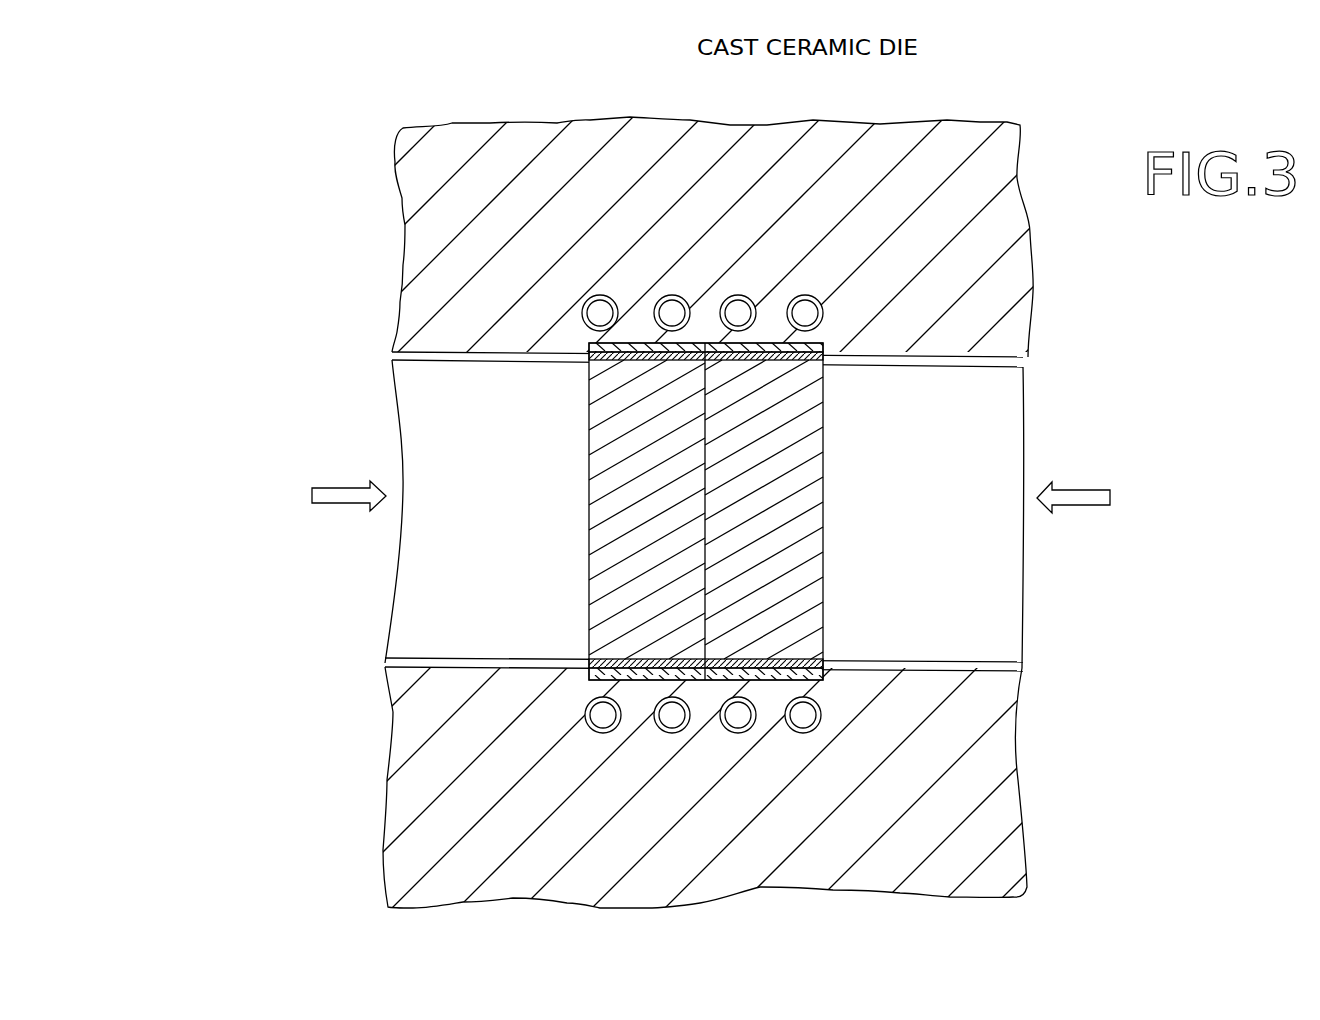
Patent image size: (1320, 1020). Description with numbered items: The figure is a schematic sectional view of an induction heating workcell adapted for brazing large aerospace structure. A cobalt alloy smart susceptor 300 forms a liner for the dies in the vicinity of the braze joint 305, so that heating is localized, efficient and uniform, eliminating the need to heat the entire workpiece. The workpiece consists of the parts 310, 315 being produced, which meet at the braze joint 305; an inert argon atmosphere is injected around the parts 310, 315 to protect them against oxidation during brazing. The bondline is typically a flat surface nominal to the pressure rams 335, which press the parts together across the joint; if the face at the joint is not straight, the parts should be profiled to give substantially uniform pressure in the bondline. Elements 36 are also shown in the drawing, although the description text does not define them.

The smart susceptor 300 is at (633, 344).
The braze joint 305 is at (703, 511).
The part 310 is at (470, 362).
The part 315 is at (1001, 664).
The heating elements 36 is at (587, 327).
The pressure rams 335 is at (1090, 490).